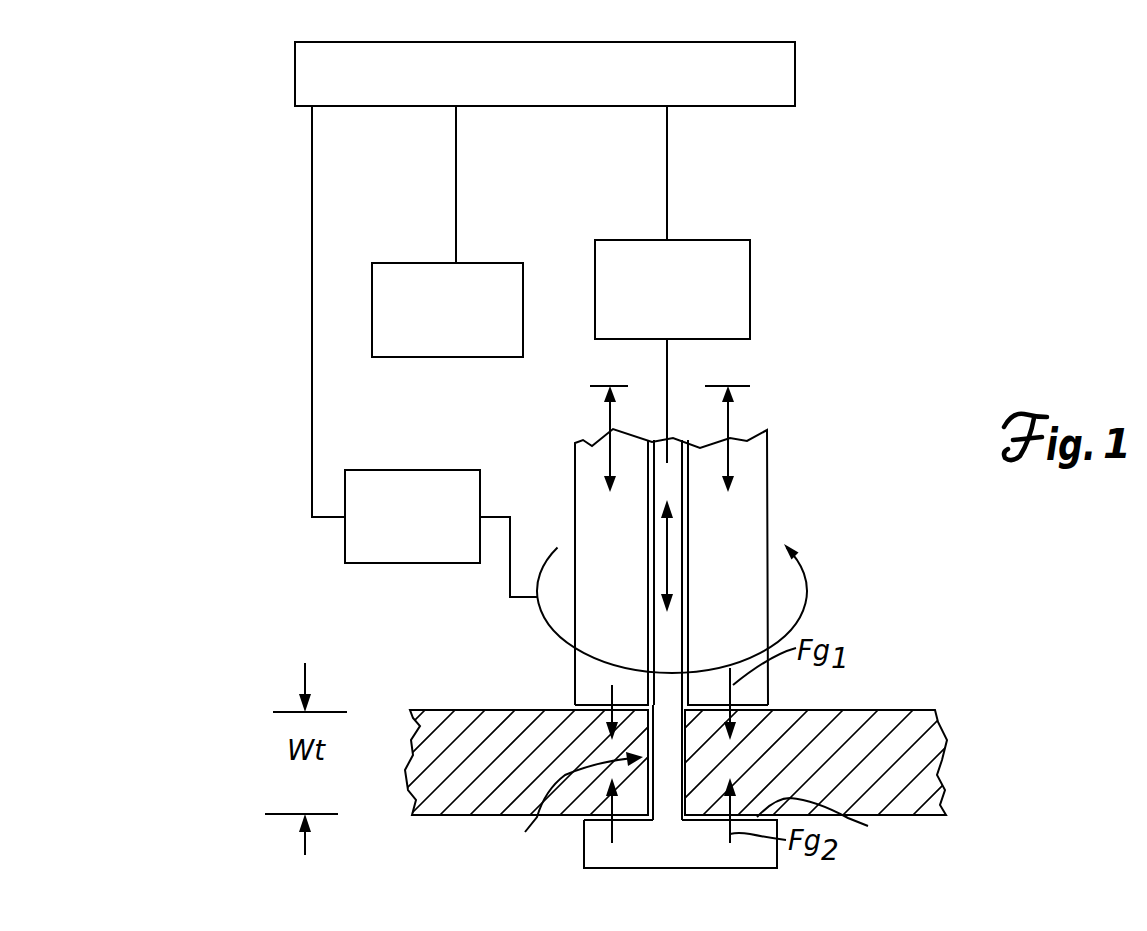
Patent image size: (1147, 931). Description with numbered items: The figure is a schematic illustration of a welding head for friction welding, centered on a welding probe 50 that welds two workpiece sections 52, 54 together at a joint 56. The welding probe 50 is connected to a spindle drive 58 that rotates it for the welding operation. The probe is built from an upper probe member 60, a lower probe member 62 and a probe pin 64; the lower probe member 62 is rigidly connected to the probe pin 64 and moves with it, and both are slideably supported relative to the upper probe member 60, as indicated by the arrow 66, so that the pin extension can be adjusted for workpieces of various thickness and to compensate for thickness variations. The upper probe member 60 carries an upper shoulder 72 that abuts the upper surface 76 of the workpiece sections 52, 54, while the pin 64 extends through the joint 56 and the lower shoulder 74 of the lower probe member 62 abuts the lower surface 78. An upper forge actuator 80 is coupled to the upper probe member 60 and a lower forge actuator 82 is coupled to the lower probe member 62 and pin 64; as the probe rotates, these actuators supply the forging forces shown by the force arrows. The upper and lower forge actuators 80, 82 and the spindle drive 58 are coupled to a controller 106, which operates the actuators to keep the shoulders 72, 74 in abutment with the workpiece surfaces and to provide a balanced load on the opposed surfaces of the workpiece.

The controller 106 is at (803, 46).
The upper forge actuator 80 is at (476, 258).
The lower forge actuator 82 is at (758, 248).
The spindle drive 58 is at (408, 460).
The welding probe 50 is at (786, 438).
The probe pin 64 is at (666, 628).
The arrow 66 is at (668, 547).
The upper probe member 60 is at (757, 597).
The workpiece section 52 is at (482, 722).
The workpiece section 54 is at (900, 710).
The joint 56 is at (574, 811).
The lower probe member 62 is at (720, 853).
The upper shoulder 72 is at (748, 705).
The lower shoulder 74 is at (831, 824).
The upper surface 76 is at (520, 712).
The lower surface 78 is at (430, 820).